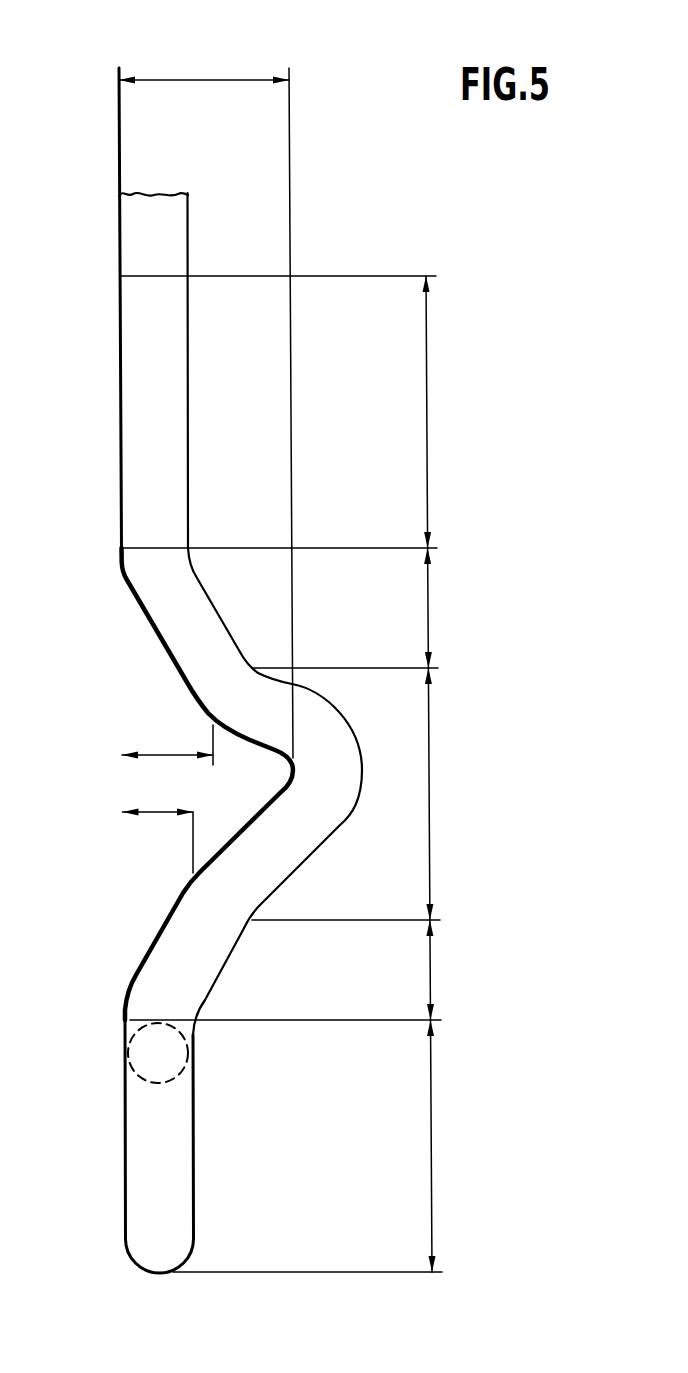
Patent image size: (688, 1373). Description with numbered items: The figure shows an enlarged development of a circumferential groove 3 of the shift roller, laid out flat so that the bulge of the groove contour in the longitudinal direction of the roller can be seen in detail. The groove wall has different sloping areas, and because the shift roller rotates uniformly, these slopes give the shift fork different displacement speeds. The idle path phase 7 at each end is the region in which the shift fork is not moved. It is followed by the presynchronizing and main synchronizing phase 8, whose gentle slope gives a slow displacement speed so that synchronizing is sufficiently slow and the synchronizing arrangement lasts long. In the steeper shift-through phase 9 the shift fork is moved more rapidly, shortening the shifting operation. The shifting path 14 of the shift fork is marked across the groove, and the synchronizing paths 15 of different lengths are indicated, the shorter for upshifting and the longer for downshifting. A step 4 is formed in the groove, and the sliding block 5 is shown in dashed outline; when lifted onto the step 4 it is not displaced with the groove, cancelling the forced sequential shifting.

The circumferential groove 3 is at (143, 1200).
The step 4 is at (143, 672).
The sliding block 5 is at (140, 1050).
The idle path phase 7 is at (426, 397).
The presynchronizing and main synchronizing phase 8 is at (429, 608).
The shift-through phase 9 is at (430, 797).
The shifting path 14 is at (212, 78).
The synchronizing paths 15 is at (168, 753).